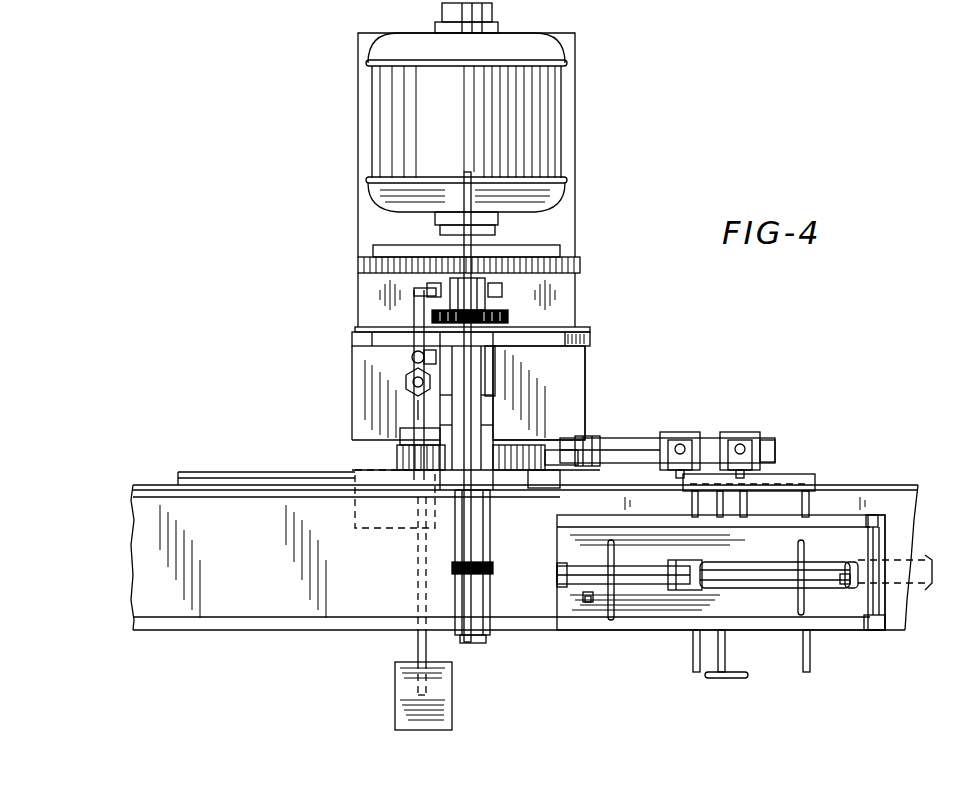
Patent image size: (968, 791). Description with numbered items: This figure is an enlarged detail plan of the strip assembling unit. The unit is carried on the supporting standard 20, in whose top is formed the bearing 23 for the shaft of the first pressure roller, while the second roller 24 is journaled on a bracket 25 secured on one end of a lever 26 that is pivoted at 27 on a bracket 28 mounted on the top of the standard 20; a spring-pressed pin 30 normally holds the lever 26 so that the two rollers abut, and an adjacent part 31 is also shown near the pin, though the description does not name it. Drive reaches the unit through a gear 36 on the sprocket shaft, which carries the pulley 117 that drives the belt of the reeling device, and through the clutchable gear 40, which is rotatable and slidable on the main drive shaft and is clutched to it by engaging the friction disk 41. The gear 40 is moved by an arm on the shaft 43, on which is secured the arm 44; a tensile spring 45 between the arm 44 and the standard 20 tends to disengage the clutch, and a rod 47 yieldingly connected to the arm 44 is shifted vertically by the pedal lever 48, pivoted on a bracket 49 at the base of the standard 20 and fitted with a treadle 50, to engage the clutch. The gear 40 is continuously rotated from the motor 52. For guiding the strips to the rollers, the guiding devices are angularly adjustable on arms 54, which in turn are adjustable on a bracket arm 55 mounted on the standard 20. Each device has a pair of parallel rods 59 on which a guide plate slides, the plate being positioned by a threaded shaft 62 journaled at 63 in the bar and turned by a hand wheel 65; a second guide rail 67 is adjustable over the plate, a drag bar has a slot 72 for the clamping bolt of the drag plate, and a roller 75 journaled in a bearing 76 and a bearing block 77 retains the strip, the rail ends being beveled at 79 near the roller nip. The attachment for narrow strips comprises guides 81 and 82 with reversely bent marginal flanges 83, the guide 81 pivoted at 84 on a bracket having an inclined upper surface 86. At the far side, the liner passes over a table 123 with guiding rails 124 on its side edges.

The supporting standard 20 is at (372, 337).
The bearing 23 is at (497, 435).
The second roller 24 is at (490, 630).
The bracket 25 is at (480, 545).
The lever 26 is at (448, 227).
The pivot 27 is at (580, 322).
The bracket 28 is at (497, 395).
The spring-pressed pin 30 is at (497, 377).
The collar 31 is at (508, 315).
The gear 36 is at (400, 458).
The gear 40 is at (358, 262).
The friction disk 41 is at (420, 250).
The shaft 43 is at (427, 285).
The arm 44 is at (410, 370).
The tensile spring 45 is at (410, 357).
The rod 47 is at (404, 382).
The pedal lever 48 is at (416, 410).
The bracket 49 is at (405, 433).
The treadle 50 is at (440, 695).
The motor 52 is at (414, 107).
The arm 54 is at (745, 472).
The bracket arm 55 is at (640, 447).
The parallel rods 59 is at (695, 660).
The threaded shaft 62 is at (725, 655).
The journal 63 is at (785, 480).
The hand wheel 65 is at (730, 678).
The second guide rail 67 is at (688, 575).
The slot 72 is at (614, 612).
The roller 75 is at (883, 548).
The bearing 76 is at (880, 520).
The bearing block 77 is at (872, 630).
The beveled ends 79 is at (798, 600).
The guide 81 is at (580, 566).
The guide 82 is at (825, 570).
The reversely bent marginal flanges 83 is at (565, 568).
The pivot 84 is at (845, 580).
The inclined upper surface 86 is at (583, 596).
The pulley 117 is at (542, 478).
The table 123 is at (160, 587).
The guiding rails 124 is at (150, 493).